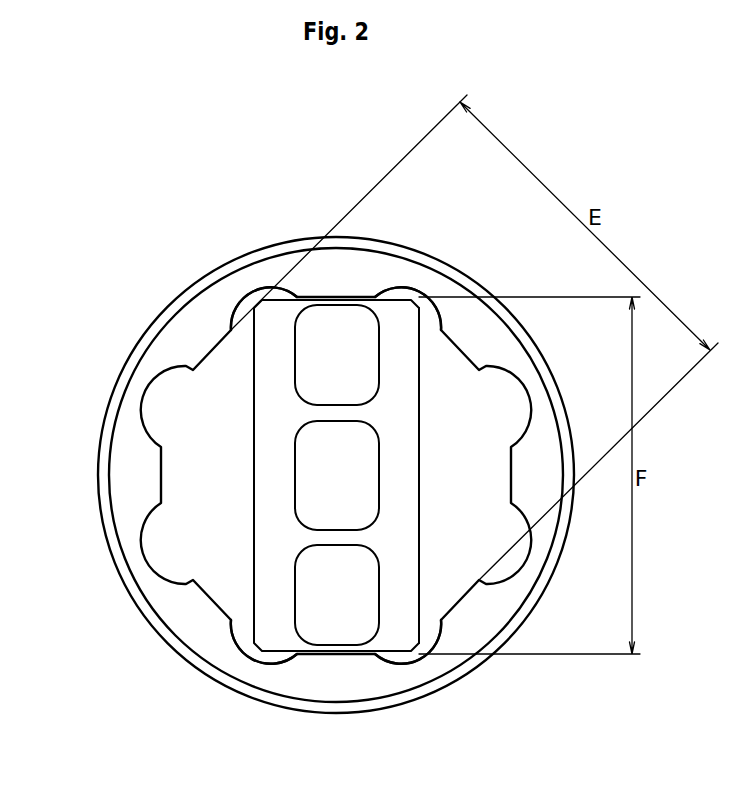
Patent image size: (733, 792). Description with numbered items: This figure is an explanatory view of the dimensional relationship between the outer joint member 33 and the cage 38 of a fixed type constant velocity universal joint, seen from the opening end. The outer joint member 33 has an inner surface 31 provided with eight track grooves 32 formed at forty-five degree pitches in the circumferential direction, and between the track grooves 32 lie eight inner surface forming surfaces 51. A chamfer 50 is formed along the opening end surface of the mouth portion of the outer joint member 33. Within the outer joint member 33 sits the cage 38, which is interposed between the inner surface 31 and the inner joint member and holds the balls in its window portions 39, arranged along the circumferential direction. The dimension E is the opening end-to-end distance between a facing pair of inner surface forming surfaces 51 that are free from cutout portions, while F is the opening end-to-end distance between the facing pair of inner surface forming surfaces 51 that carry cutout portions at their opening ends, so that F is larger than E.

The inner surface 31 is at (451, 360).
The track grooves 32 is at (144, 400).
The outer joint member 33 is at (85, 438).
The cage 38 is at (415, 396).
The window portions 39 is at (297, 365).
The chamfer 50 is at (190, 327).
The inner surface forming surfaces 51 is at (328, 297).